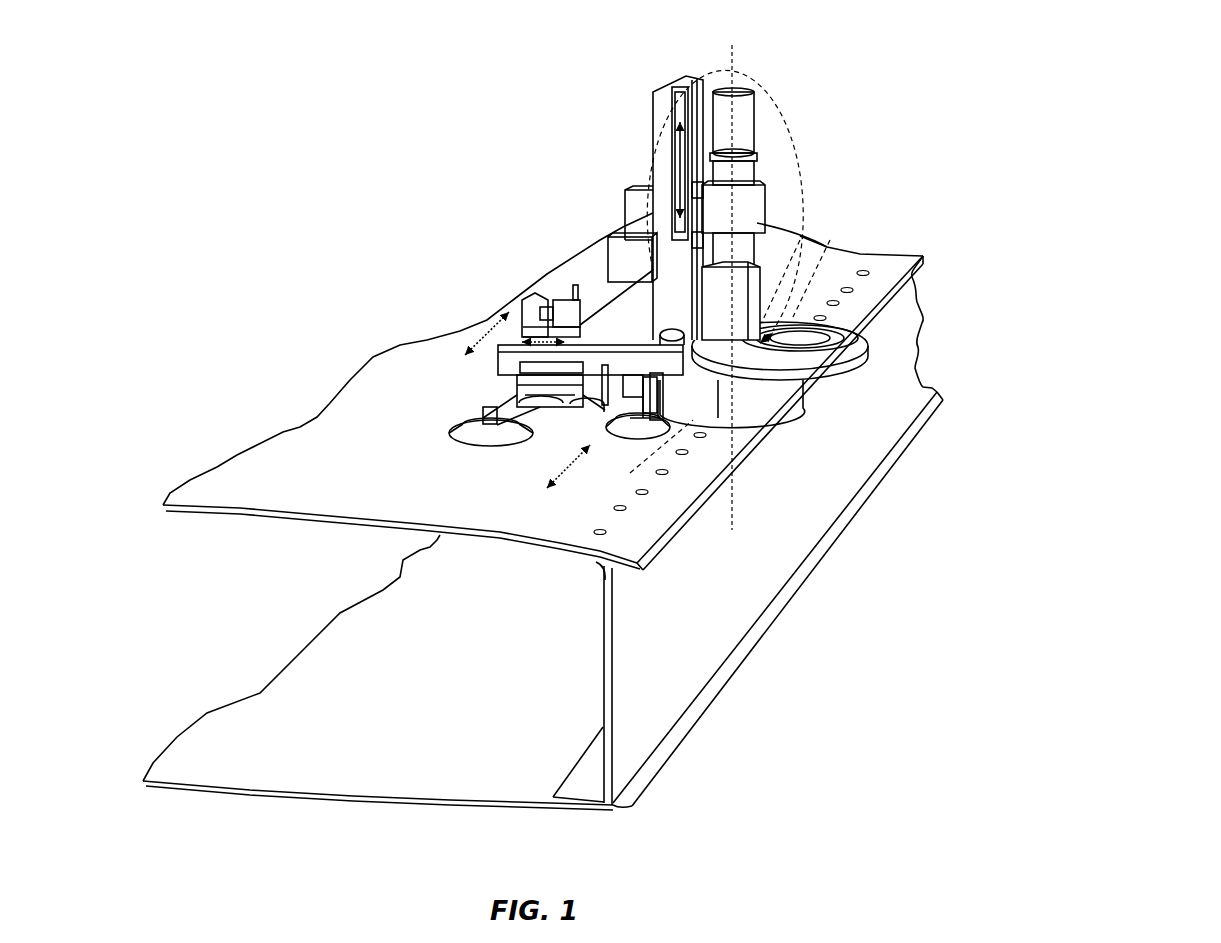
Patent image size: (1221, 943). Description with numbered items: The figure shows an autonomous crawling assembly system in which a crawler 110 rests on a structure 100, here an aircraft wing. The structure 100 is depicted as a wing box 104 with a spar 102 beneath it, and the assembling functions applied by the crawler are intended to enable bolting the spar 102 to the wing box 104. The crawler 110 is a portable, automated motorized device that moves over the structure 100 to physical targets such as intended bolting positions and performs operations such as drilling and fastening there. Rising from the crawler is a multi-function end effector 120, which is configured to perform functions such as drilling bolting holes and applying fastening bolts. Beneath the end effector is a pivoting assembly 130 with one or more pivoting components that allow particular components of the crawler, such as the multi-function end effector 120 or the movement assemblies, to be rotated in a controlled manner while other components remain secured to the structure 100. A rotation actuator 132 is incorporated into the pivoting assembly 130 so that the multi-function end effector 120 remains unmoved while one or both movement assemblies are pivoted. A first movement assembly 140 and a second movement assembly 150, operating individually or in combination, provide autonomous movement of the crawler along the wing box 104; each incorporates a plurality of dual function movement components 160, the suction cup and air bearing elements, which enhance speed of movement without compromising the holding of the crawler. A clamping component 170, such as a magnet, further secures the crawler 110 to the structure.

The structure 100 is at (524, 511).
The spar 102 is at (707, 592).
The wing box 104 is at (228, 493).
The crawler 110 is at (713, 331).
The multi-function end effector 120 is at (795, 150).
The pivoting assembly 130 is at (828, 338).
The rotation actuator 132 is at (632, 260).
The first movement assembly 140 is at (520, 370).
The second movement assembly 150 is at (675, 370).
The dual function movement components 160 is at (460, 436).
The clamping component 170 is at (803, 392).